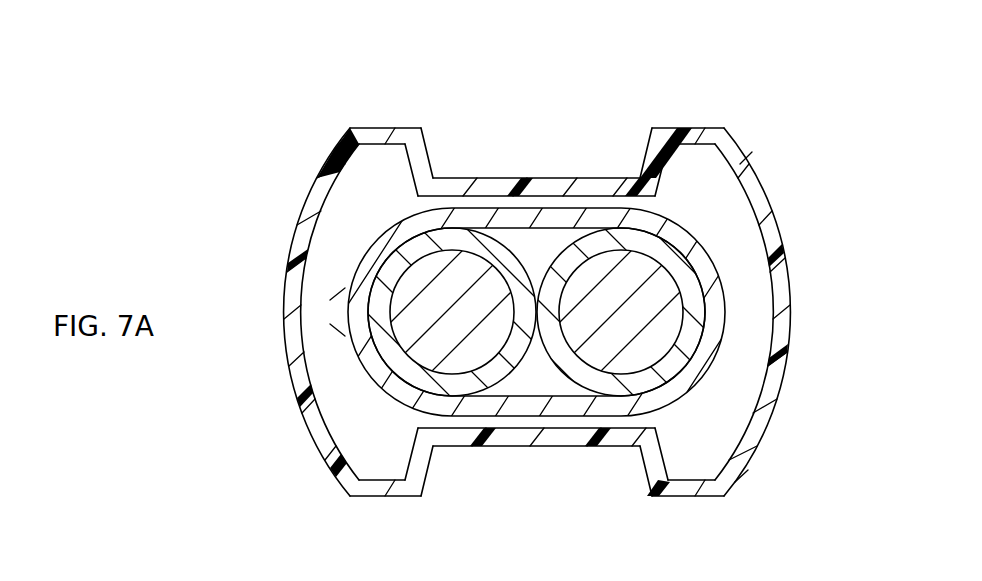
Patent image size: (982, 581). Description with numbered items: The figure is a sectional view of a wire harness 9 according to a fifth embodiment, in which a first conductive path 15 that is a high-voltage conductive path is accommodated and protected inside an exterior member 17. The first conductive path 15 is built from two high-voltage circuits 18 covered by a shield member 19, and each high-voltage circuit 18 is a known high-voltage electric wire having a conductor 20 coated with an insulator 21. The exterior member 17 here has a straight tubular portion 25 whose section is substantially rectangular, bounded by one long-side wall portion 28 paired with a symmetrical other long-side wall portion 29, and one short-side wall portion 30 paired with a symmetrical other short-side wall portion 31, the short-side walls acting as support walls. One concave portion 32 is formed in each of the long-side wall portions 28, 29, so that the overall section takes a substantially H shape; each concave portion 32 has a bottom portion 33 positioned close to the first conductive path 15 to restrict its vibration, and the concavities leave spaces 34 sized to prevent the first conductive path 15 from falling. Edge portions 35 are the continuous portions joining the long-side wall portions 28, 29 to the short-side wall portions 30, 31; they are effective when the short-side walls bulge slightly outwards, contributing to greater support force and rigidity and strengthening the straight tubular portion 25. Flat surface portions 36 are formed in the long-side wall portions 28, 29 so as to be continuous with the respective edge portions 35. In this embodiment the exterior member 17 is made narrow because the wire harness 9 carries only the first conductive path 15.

The wire harness 9 is at (590, 90).
The first conductive path 15 is at (538, 300).
The exterior member 17 is at (665, 123).
The high-voltage circuit 18 is at (538, 300).
The shield member 19 is at (388, 385).
The conductor 20 is at (408, 328).
The insulator 21 is at (393, 352).
The straight tubular portion 25 is at (683, 128).
The one long-side wall portion 28 is at (406, 488).
The other long-side wall portion 29 is at (404, 138).
The one short-side wall portion 30 is at (288, 270).
The other short-side wall portion 31 is at (772, 240).
The concave portion 32 is at (531, 177).
The bottom portion 33 is at (503, 190).
The space 34 is at (373, 175).
The edge portion 35 is at (352, 129).
The flat surface portion 36 is at (378, 128).